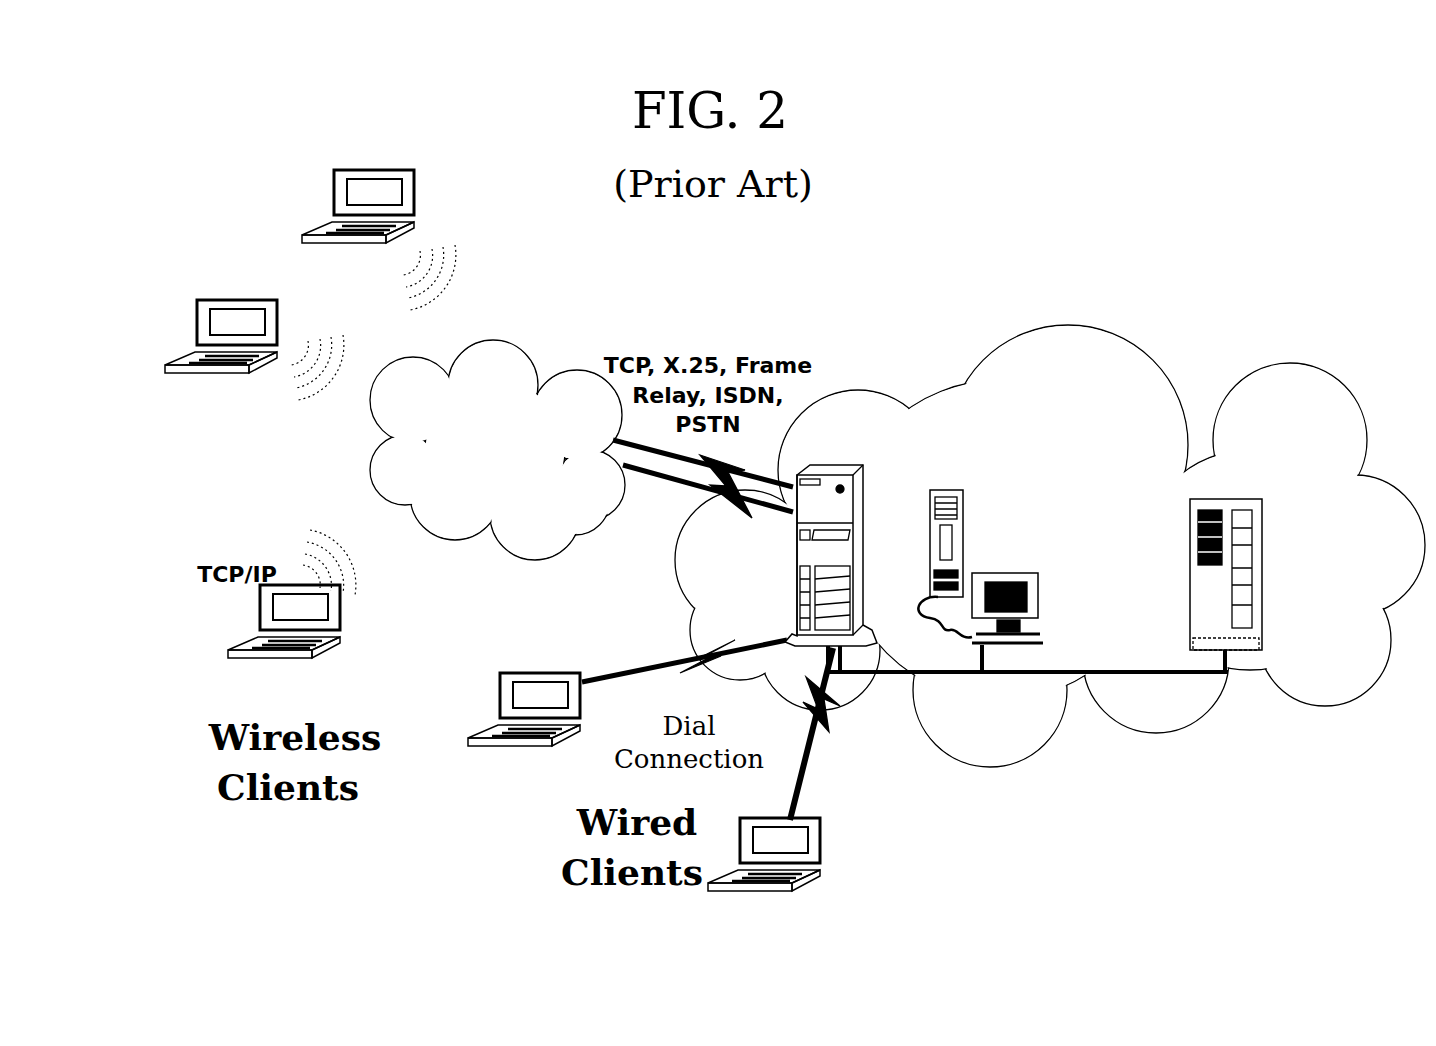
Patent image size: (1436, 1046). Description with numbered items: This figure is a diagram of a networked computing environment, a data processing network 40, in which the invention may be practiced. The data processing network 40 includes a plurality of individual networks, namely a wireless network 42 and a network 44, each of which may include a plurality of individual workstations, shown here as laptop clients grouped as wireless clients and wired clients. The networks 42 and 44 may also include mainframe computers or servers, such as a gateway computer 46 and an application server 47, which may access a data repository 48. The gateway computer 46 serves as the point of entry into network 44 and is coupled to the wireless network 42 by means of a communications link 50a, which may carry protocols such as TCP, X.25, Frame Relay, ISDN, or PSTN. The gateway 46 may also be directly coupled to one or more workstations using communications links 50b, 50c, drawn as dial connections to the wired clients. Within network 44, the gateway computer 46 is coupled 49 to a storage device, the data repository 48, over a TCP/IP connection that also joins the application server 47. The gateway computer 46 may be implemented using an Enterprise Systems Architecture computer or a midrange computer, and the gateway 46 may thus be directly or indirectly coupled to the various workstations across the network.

The data processing network 40 is at (1189, 901).
The wireless network 42 is at (497, 446).
The network 44 is at (1050, 541).
The gateway computer 46 is at (852, 561).
The application server 47 is at (980, 581).
The data repository 48 is at (1249, 585).
The coupling 49 is at (1028, 692).
The communications link 50a is at (703, 488).
The communications link 50b is at (684, 654).
The communications link 50c is at (827, 734).